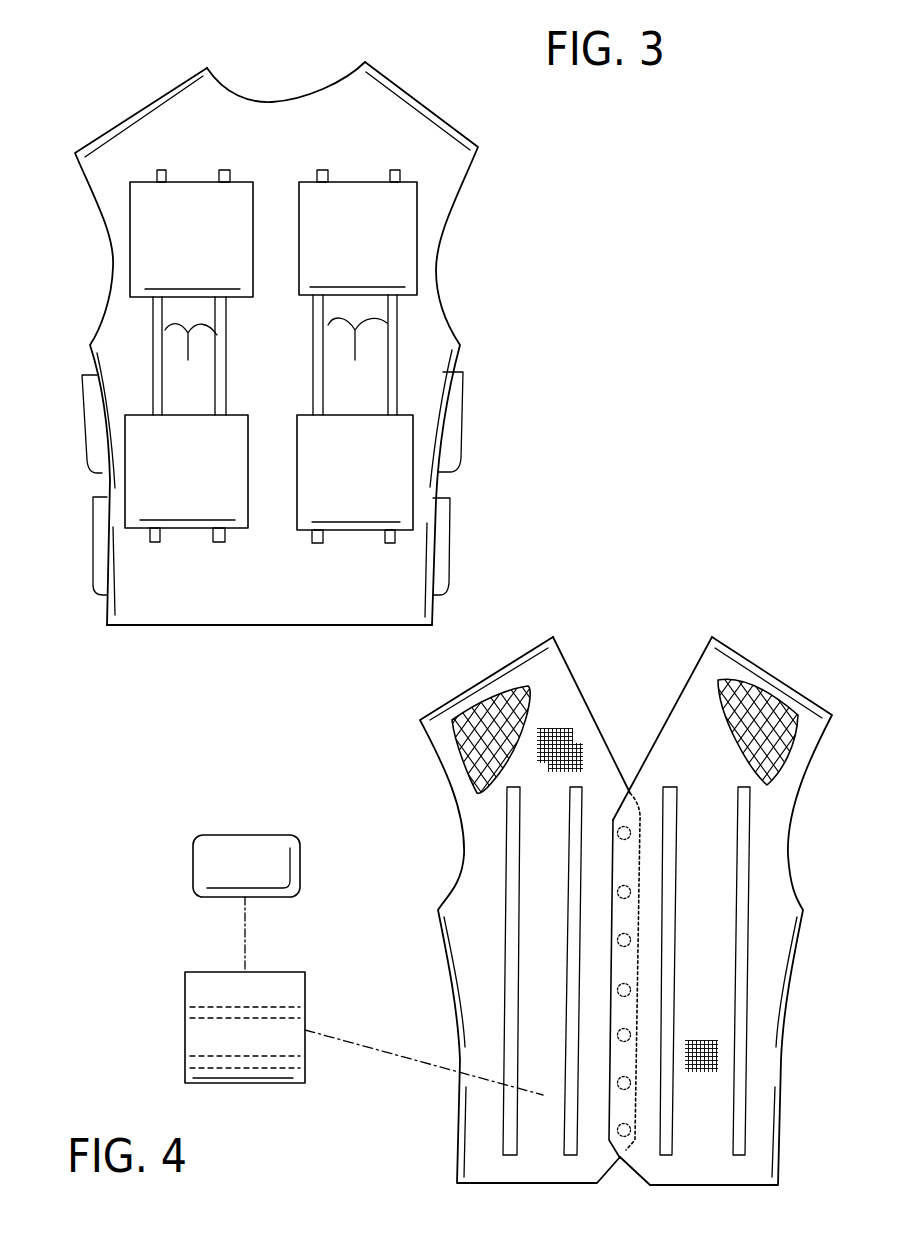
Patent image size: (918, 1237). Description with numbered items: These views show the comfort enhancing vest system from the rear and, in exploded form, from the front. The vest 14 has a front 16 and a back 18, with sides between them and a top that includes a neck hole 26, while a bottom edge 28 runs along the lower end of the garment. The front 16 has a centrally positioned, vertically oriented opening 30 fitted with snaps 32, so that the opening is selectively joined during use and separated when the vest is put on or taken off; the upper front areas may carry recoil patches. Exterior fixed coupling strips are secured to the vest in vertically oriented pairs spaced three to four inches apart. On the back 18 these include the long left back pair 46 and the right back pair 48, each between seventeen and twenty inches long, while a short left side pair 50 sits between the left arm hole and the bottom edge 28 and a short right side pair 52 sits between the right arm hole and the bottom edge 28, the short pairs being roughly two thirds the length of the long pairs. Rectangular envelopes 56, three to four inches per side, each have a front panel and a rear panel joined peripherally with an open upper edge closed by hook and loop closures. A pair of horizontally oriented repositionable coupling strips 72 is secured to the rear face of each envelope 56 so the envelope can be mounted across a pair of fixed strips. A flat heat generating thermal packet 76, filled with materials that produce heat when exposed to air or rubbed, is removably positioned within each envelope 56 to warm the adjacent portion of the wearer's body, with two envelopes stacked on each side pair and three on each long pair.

In FIG. 4, the vest 14 is at (420, 722).
In FIG. 4, the front 16 is at (722, 911).
In FIG. 3, the back 18 is at (276, 343).
In FIG. 3, the neck hole 26 is at (271, 100).
In FIG. 3, the bottom edge 28 is at (267, 627).
In FIG. 4, the opening 30 is at (613, 843).
In FIG. 4, the snaps 32 is at (627, 938).
In FIG. 3, the long left back pair 46 is at (189, 356).
In FIG. 3, the right back pair 48 is at (355, 355).
In FIG. 3, the short left side pair 50 is at (100, 420).
In FIG. 3, the short right side pair 52 is at (445, 418).
In FIG. 3, the rectangular envelope 56 is at (358, 232).
In FIG. 4, the rectangular envelope 56 is at (185, 1037).
In FIG. 4, the repositionable coupling strips 72 is at (292, 1015).
In FIG. 4, the heat generating thermal packet 76 is at (225, 852).